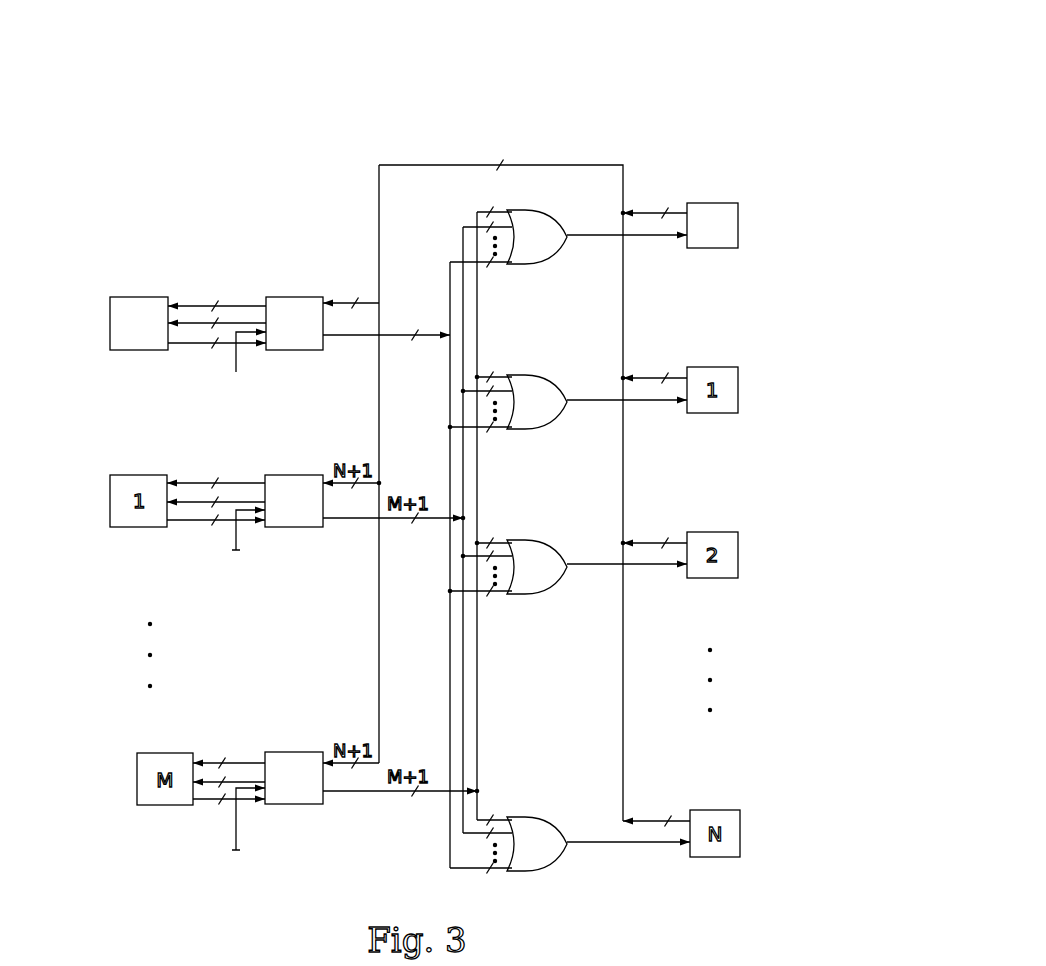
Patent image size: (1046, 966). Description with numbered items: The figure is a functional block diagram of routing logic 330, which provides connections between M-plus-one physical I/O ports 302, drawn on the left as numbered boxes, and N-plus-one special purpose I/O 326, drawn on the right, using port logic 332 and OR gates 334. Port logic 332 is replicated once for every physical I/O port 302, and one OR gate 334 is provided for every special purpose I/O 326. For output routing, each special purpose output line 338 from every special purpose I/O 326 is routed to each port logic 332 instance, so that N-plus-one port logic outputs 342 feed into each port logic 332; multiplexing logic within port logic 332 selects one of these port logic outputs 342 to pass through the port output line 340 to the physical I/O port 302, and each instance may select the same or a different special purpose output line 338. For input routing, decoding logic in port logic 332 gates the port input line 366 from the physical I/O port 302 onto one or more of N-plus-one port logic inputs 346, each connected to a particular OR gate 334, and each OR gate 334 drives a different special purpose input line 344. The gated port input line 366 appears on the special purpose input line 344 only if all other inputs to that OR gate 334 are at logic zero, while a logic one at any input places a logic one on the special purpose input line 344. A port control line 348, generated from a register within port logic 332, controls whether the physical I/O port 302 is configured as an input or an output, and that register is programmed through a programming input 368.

The routing logic 330 is at (237, 103).
The physical I/O port 302 is at (125, 297).
The port output line 340 is at (207, 304).
The port control line 348 is at (244, 318).
The port input line 366 is at (180, 348).
The programming input 368 is at (227, 387).
The port logic 332 is at (297, 297).
The port logic outputs 342 is at (358, 268).
The port logic inputs 346 is at (358, 338).
The OR gate 334 is at (523, 263).
The special purpose I/O 326 is at (727, 202).
The special purpose output line 338 is at (650, 208).
The special purpose input line 344 is at (650, 238).